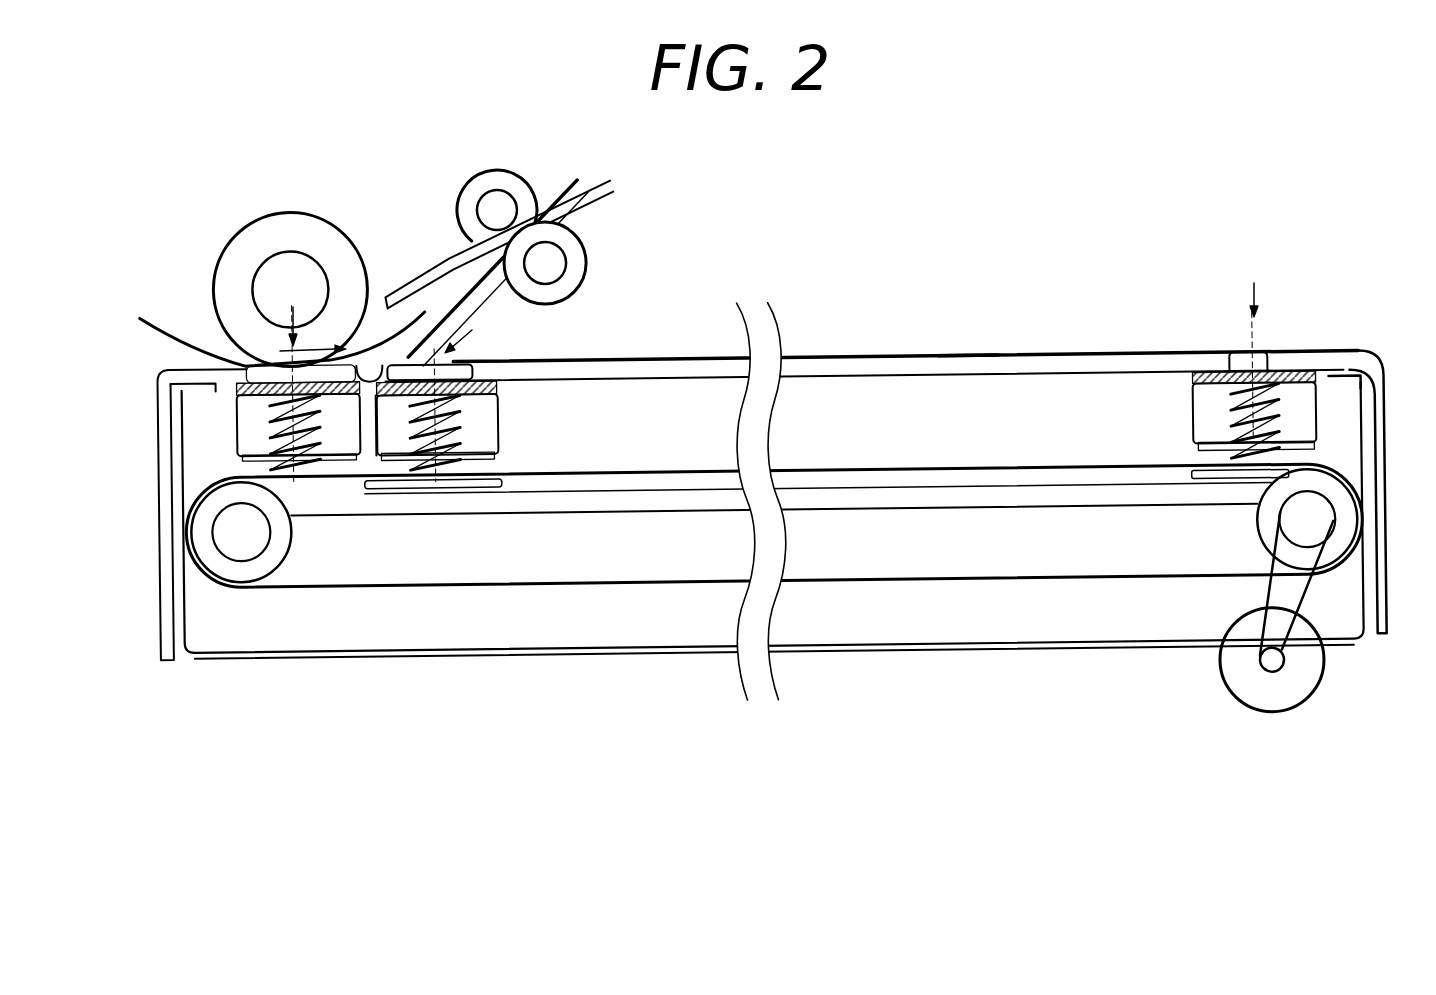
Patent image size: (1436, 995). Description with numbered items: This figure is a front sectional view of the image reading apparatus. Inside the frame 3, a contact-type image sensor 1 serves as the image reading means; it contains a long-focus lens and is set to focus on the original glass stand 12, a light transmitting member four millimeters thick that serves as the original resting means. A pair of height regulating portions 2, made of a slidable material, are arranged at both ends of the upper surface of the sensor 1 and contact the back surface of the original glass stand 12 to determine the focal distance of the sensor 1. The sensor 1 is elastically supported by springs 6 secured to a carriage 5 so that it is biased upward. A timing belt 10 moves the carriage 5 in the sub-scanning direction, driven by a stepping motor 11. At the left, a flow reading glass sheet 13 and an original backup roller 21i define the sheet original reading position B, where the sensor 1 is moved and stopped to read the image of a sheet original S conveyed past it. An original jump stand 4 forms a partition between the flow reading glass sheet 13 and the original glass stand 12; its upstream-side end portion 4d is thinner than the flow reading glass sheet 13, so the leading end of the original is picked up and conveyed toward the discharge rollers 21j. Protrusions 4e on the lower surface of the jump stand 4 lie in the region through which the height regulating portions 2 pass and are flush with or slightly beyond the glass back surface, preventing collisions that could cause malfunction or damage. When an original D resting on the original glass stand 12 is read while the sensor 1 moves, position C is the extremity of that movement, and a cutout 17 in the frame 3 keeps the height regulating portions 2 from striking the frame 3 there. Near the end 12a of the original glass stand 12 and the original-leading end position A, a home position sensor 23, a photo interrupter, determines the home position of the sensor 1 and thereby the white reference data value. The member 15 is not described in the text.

The contact-type image sensor 1 is at (1310, 424).
The height regulating portions 2 is at (1281, 364).
The frame 3 is at (1373, 359).
The original jump stand 4 is at (406, 362).
The upstream-side end portion 4d is at (374, 363).
The protrusions 4e is at (376, 400).
The carriage 5 is at (1218, 480).
The springs 6 is at (1247, 371).
The timing belt 10 is at (960, 582).
The stepping motor 11 is at (1305, 681).
The original glass stand 12 is at (858, 358).
The end of the original glass stand 12a is at (410, 396).
The flow reading glass sheet 13 is at (273, 356).
The left bracket 15 is at (228, 388).
The cutout 17 is at (1329, 372).
The original backup roller 21i is at (300, 228).
The discharge rollers 21j is at (585, 263).
The home position sensor 23 is at (488, 498).
The sheet original S is at (173, 332).
The original-leading end position A is at (468, 334).
The sheet original reading position B is at (313, 315).
The position C is at (1254, 285).
The original D is at (969, 356).